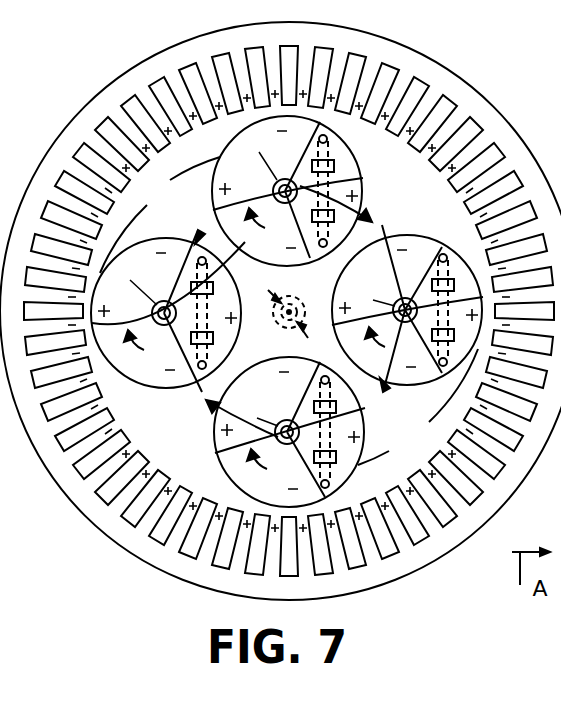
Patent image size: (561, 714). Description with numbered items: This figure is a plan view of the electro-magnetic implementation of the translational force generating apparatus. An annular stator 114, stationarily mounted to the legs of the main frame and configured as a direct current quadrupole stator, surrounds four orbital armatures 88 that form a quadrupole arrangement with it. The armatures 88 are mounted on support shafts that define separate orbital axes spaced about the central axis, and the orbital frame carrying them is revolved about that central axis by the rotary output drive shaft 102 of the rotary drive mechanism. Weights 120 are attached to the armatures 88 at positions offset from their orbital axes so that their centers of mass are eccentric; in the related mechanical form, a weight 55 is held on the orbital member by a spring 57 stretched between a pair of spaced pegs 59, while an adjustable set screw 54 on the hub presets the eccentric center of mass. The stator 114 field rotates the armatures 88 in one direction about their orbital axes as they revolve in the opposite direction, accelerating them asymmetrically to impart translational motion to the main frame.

The annular stator 114 is at (423, 55).
The orbital armature 88 is at (289, 311).
The adjustable set screw 54 is at (276, 188).
The weight 55 is at (362, 186).
The spring 57 is at (336, 166).
The peg 59 is at (200, 375).
The rotary output drive shaft 102 is at (296, 305).
The weight 120 is at (287, 312).